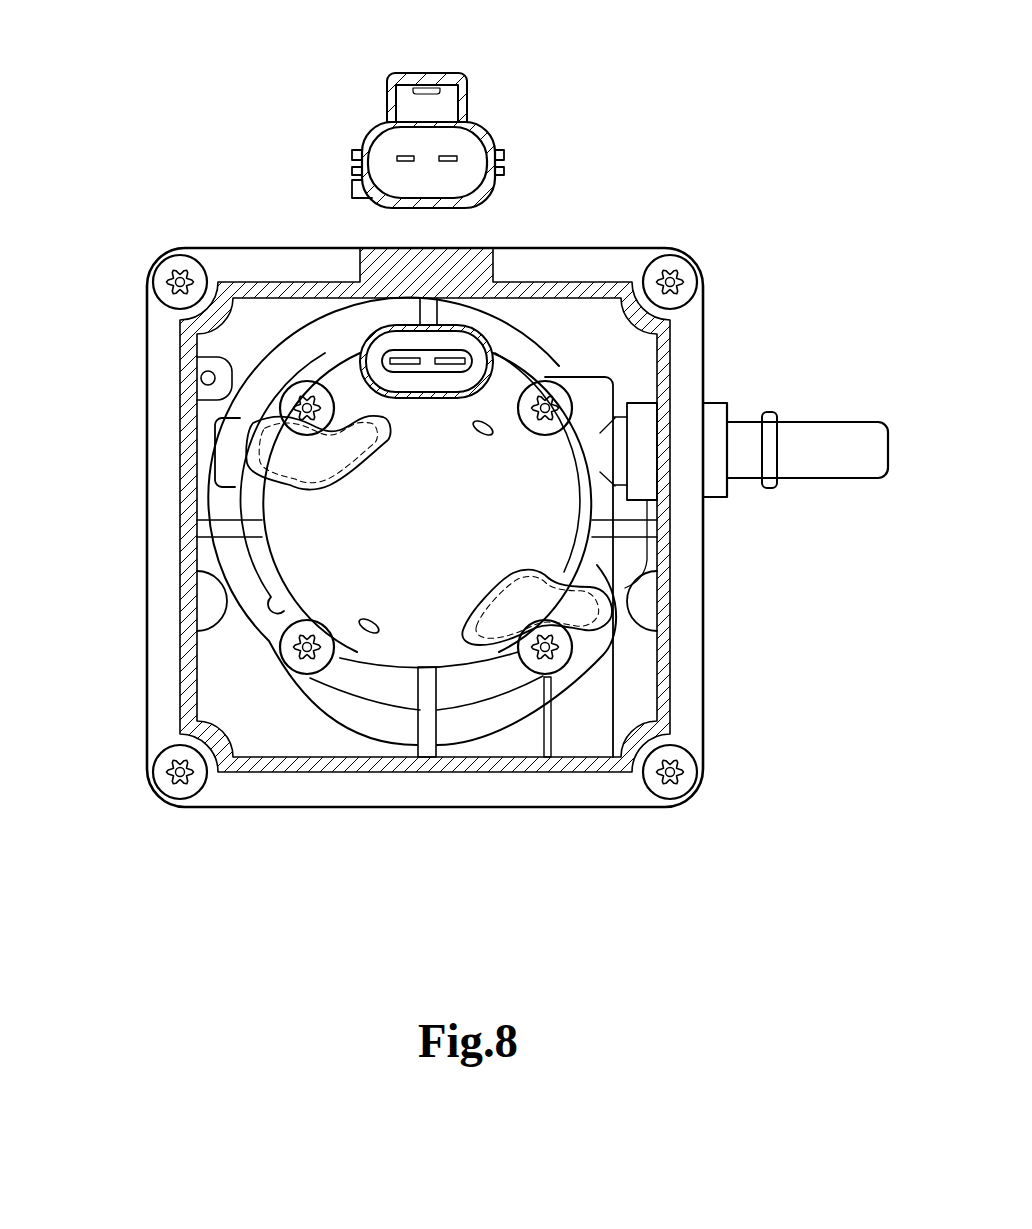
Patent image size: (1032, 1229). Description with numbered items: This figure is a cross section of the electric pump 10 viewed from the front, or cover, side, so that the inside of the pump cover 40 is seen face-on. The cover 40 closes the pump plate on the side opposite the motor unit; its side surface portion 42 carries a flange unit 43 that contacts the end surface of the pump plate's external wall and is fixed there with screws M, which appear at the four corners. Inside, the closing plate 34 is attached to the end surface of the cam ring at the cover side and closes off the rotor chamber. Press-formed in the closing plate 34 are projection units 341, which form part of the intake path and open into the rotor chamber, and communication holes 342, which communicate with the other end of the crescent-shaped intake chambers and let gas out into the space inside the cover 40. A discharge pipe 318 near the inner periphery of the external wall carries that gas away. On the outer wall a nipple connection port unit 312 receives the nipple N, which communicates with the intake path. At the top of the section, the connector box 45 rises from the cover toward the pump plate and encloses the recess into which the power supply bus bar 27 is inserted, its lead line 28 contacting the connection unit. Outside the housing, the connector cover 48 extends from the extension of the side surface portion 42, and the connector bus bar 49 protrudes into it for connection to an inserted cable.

The electric pump 10 is at (586, 80).
The pump cover 40 is at (284, 838).
The side surface portion 42 is at (667, 617).
The flange unit 43 is at (690, 682).
The connector box 45 is at (366, 333).
The connector cover 48 is at (364, 126).
The connector bus bar 49 is at (408, 163).
The power supply bus bar 27 is at (418, 372).
The lead line 28 is at (453, 372).
The closing plate 34 is at (287, 560).
The nipple connection port unit 312 is at (714, 410).
The discharge pipe 318 is at (202, 373).
The projection unit 341 is at (250, 447).
The communication holes 342 is at (487, 423).
The screws M is at (688, 776).
The nipple N is at (828, 466).